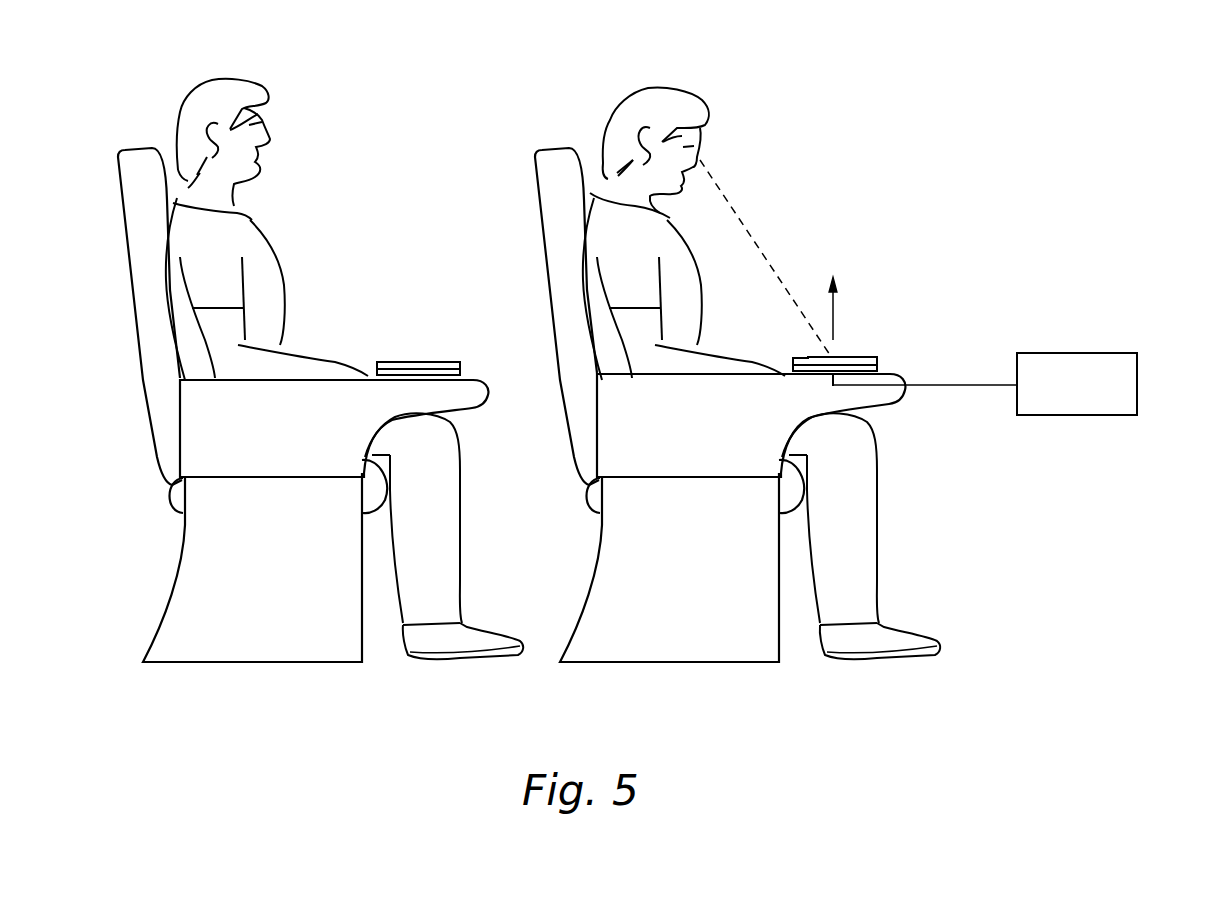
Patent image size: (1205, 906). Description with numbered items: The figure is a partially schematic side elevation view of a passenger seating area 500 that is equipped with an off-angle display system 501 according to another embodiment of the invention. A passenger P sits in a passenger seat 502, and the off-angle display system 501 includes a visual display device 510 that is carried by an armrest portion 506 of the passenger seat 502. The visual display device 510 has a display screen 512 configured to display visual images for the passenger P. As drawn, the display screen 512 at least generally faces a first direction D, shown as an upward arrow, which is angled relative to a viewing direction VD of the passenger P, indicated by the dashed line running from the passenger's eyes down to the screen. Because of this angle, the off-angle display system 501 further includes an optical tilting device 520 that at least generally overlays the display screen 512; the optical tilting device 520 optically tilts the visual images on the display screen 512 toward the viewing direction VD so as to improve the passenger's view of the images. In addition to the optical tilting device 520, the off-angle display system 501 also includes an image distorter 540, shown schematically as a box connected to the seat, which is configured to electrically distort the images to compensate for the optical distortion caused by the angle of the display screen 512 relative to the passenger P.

The passenger seating area 500 is at (953, 147).
The off-angle display system 501 is at (900, 253).
The passenger seat 502 is at (560, 150).
The armrest portion 506 is at (803, 402).
The visual display device 510 is at (877, 370).
The display screen 512 is at (807, 357).
The optical tilting device 520 is at (857, 353).
The image distorter 540 is at (1102, 352).
The passenger P is at (680, 103).
The viewing direction VD is at (763, 243).
The first direction D is at (835, 313).